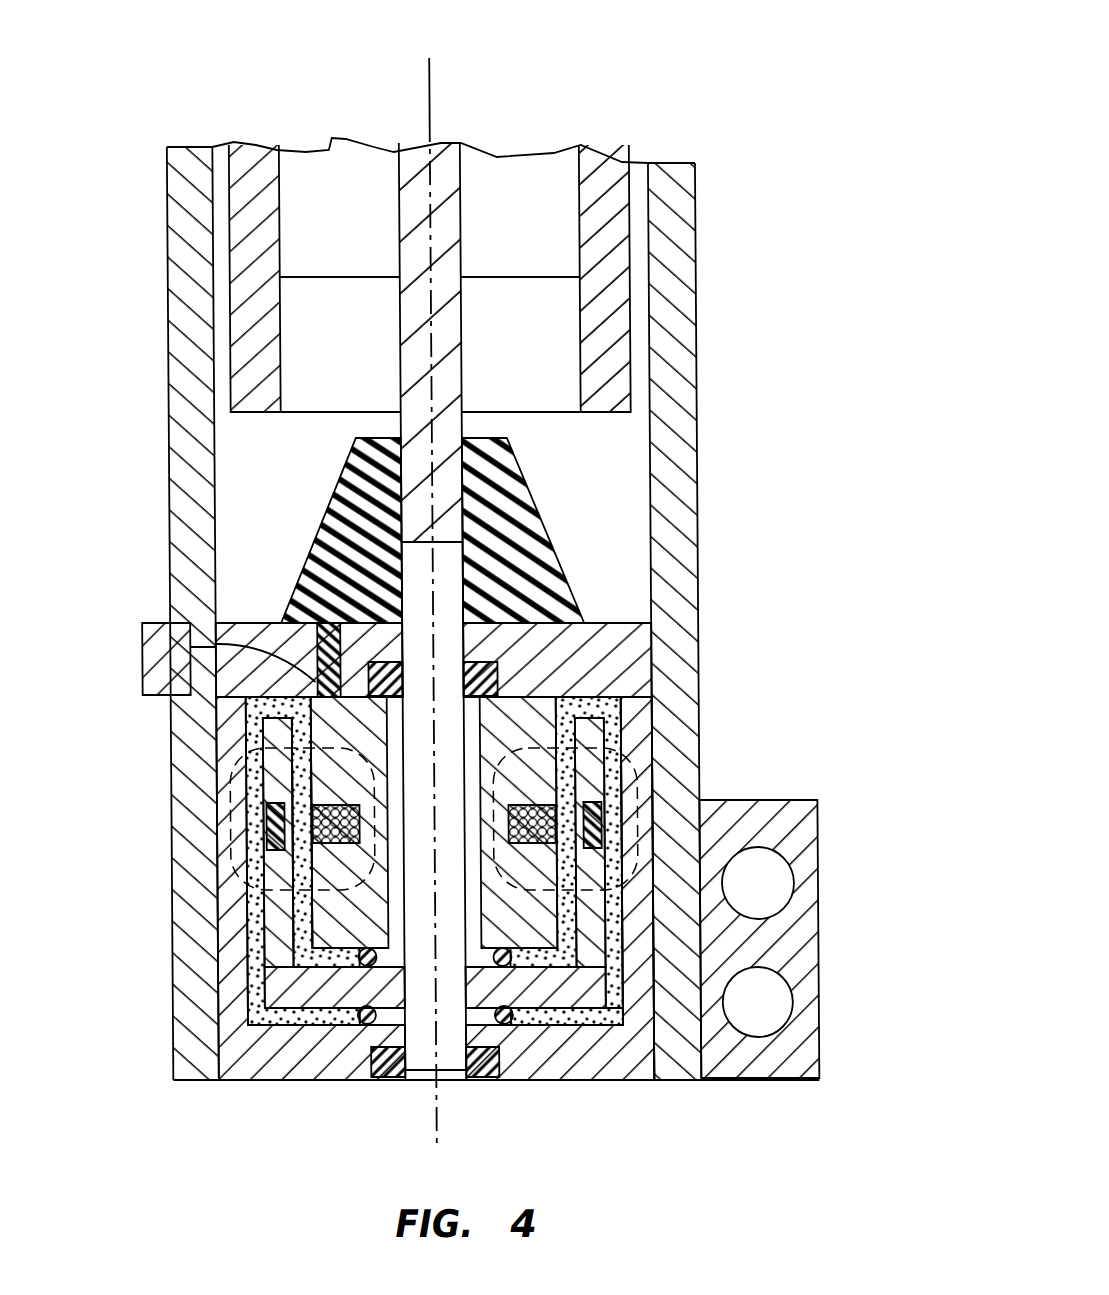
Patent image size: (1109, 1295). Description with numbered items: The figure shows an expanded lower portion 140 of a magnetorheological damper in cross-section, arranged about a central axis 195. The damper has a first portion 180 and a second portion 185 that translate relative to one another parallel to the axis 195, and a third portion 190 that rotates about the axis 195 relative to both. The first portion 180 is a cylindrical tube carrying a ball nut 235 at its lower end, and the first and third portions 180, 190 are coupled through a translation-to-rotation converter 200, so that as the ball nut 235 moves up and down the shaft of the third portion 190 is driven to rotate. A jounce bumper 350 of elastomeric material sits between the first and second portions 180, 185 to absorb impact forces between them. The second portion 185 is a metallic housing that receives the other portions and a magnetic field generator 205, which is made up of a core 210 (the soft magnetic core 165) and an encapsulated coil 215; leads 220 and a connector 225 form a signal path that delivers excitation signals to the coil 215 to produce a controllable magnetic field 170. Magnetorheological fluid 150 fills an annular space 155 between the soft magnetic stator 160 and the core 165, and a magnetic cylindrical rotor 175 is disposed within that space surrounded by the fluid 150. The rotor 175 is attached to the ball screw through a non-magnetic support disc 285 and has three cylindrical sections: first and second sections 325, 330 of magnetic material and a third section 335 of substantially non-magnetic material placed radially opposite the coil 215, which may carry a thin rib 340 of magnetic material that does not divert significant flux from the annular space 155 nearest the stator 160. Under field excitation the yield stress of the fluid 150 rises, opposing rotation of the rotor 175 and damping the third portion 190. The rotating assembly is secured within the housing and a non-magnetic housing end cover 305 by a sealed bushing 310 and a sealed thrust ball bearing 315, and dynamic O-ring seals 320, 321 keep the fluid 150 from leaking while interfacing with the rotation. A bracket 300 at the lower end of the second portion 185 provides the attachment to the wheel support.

The expanded lower portion 140 is at (794, 40).
The magnetorheological fluid 150 is at (600, 1012).
The annular space 155 is at (595, 688).
The stator 160 is at (652, 760).
The core 165 is at (601, 713).
The magnetic field 170 is at (235, 878).
The magnetic cylindrical rotor 175 is at (621, 727).
The first portion 180 is at (644, 239).
The second portion 185 is at (160, 491).
The third portion 190 is at (393, 232).
The axis 195 is at (437, 80).
The translation-to-rotation converter 200 is at (516, 266).
The magnetic field generator 205 is at (525, 681).
The core 210 is at (407, 925).
The coil 215 is at (266, 817).
The leads 220 is at (263, 663).
The connector 225 is at (142, 655).
The ball nut 235 is at (553, 412).
The non-magnetic support disc 285 is at (283, 992).
The bracket 300 is at (816, 903).
The non-magnetic housing end cover 305 is at (620, 1082).
The sealed bushing 310 is at (485, 1078).
The sealed thrust ball bearing 315 is at (385, 645).
The dynamic O-ring seal 320 is at (330, 973).
The dynamic O-ring seal 321 is at (303, 1010).
The first cylindrical section 325 is at (262, 735).
The second cylindrical section 330 is at (263, 948).
The third cylindrical section 335 is at (300, 805).
The rib 340 is at (604, 817).
The jounce bumper 350 is at (336, 480).